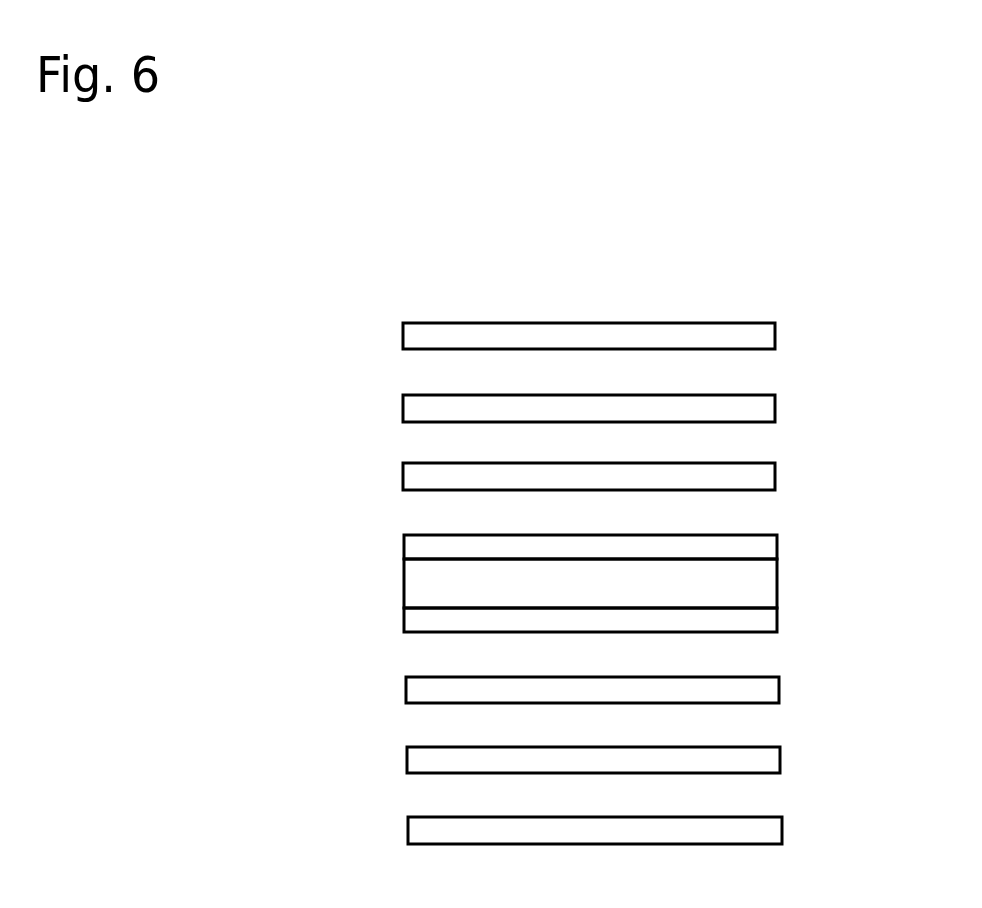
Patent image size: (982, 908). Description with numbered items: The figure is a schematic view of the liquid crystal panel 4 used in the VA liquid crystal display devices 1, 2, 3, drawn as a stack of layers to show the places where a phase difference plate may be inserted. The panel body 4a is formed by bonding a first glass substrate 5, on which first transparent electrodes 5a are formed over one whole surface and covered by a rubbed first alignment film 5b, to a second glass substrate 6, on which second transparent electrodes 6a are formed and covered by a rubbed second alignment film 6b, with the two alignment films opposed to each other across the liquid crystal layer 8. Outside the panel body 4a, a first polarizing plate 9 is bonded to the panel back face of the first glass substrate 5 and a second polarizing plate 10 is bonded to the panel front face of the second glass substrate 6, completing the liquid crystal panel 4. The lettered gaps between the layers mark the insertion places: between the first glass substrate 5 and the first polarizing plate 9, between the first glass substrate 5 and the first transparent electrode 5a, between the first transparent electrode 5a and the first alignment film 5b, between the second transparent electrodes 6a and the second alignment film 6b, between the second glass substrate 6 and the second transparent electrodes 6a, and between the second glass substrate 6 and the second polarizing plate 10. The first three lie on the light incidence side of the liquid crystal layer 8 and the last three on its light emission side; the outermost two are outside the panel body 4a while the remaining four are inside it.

The VA liquid crystal display device 1 is at (640, 139).
The VA liquid crystal display device 2 is at (588, 531).
The VA liquid crystal display device 3 is at (588, 531).
The liquid crystal panel 4 is at (587, 316).
The panel body 4a is at (380, 397).
The first glass substrate 5 is at (770, 758).
The first transparent electrode 5a is at (768, 690).
The first alignment film 5b is at (766, 618).
The second glass substrate 6 is at (765, 408).
The second transparent electrode 6a is at (765, 476).
The second alignment film 6b is at (770, 547).
The liquid crystal layer 8 is at (763, 581).
The first polarizing plate 9 is at (770, 830).
The second polarizing plate 10 is at (765, 336).